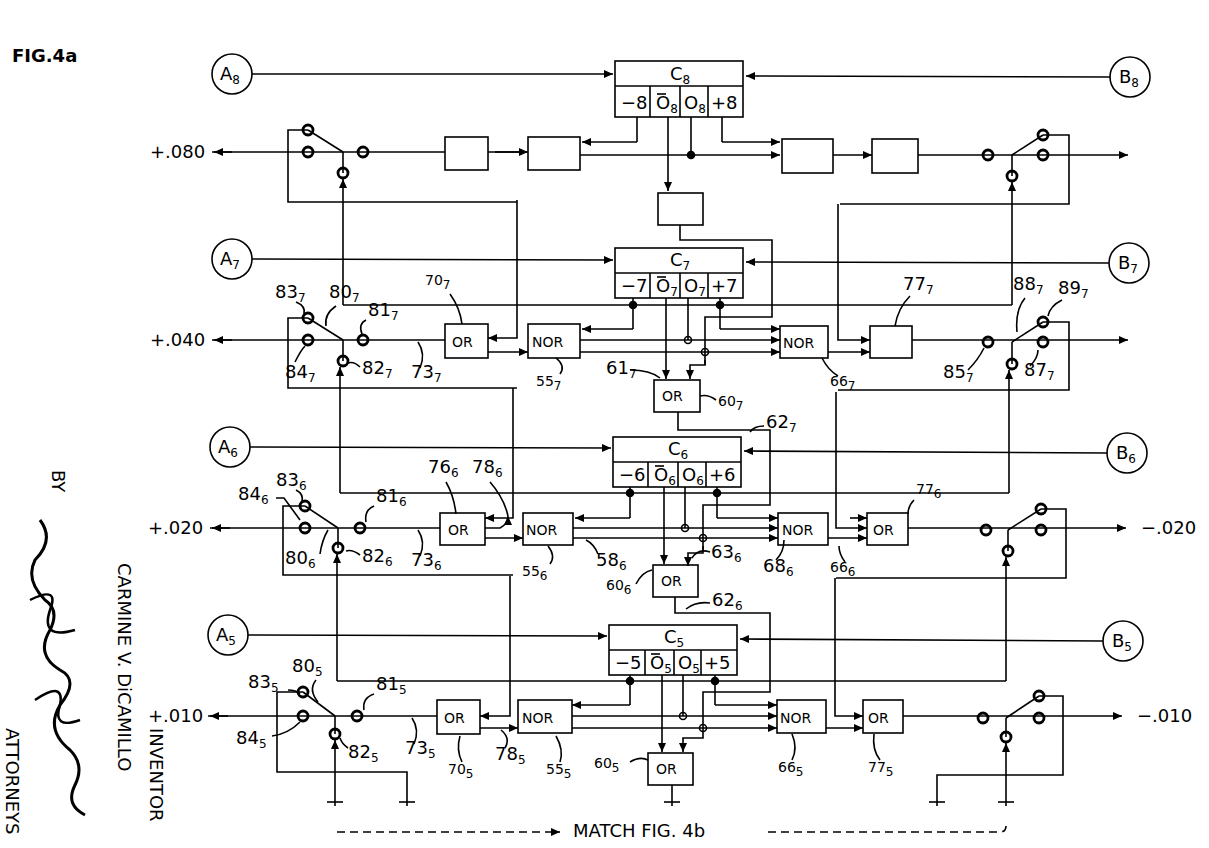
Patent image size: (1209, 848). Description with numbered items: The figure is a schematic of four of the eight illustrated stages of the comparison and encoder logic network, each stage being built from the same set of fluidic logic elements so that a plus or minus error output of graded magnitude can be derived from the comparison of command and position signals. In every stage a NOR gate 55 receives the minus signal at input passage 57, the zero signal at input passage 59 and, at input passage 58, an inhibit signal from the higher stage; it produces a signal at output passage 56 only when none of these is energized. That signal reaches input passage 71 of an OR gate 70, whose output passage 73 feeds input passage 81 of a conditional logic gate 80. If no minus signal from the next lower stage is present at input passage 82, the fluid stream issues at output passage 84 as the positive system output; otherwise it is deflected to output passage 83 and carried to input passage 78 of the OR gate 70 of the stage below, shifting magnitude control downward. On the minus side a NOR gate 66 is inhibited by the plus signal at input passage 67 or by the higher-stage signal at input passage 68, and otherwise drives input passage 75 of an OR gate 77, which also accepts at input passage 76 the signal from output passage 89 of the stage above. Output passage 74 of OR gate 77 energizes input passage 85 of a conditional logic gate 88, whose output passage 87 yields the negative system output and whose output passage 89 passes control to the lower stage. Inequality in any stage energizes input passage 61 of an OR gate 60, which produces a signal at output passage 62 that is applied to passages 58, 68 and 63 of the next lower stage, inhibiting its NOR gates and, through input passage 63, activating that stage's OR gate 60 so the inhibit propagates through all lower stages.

The NOR gate 55 is at (554, 170).
The output passage 56 is at (510, 173).
The input passage 57 is at (601, 123).
The input passage 58 is at (636, 376).
The input passage 59 is at (680, 176).
The OR gate 60 is at (705, 209).
The input passage 61 is at (698, 156).
The output passage 62 is at (726, 296).
The input passage 63 is at (717, 365).
The NOR gate 66 is at (820, 136).
The input passage 67 is at (759, 120).
The input passage 68 is at (744, 371).
The OR gate 70 is at (466, 134).
The input passage 71 is at (508, 129).
The output passage 73 is at (404, 130).
The output passage 74 is at (1020, 317).
The input passage 75 is at (870, 360).
The input passage 76 is at (856, 272).
The OR gate 77 is at (880, 136).
The input passage 78 is at (496, 269).
The conditional logic gate 80 is at (335, 134).
The input passage 81 is at (384, 139).
The input passage 82 is at (365, 179).
The output passage 83 is at (294, 115).
The output passage 84 is at (300, 171).
The input passage 85 is at (970, 137).
The output passage 87 is at (1043, 172).
The conditional logic gate 88 is at (1013, 134).
The output passage 89 is at (1054, 115).